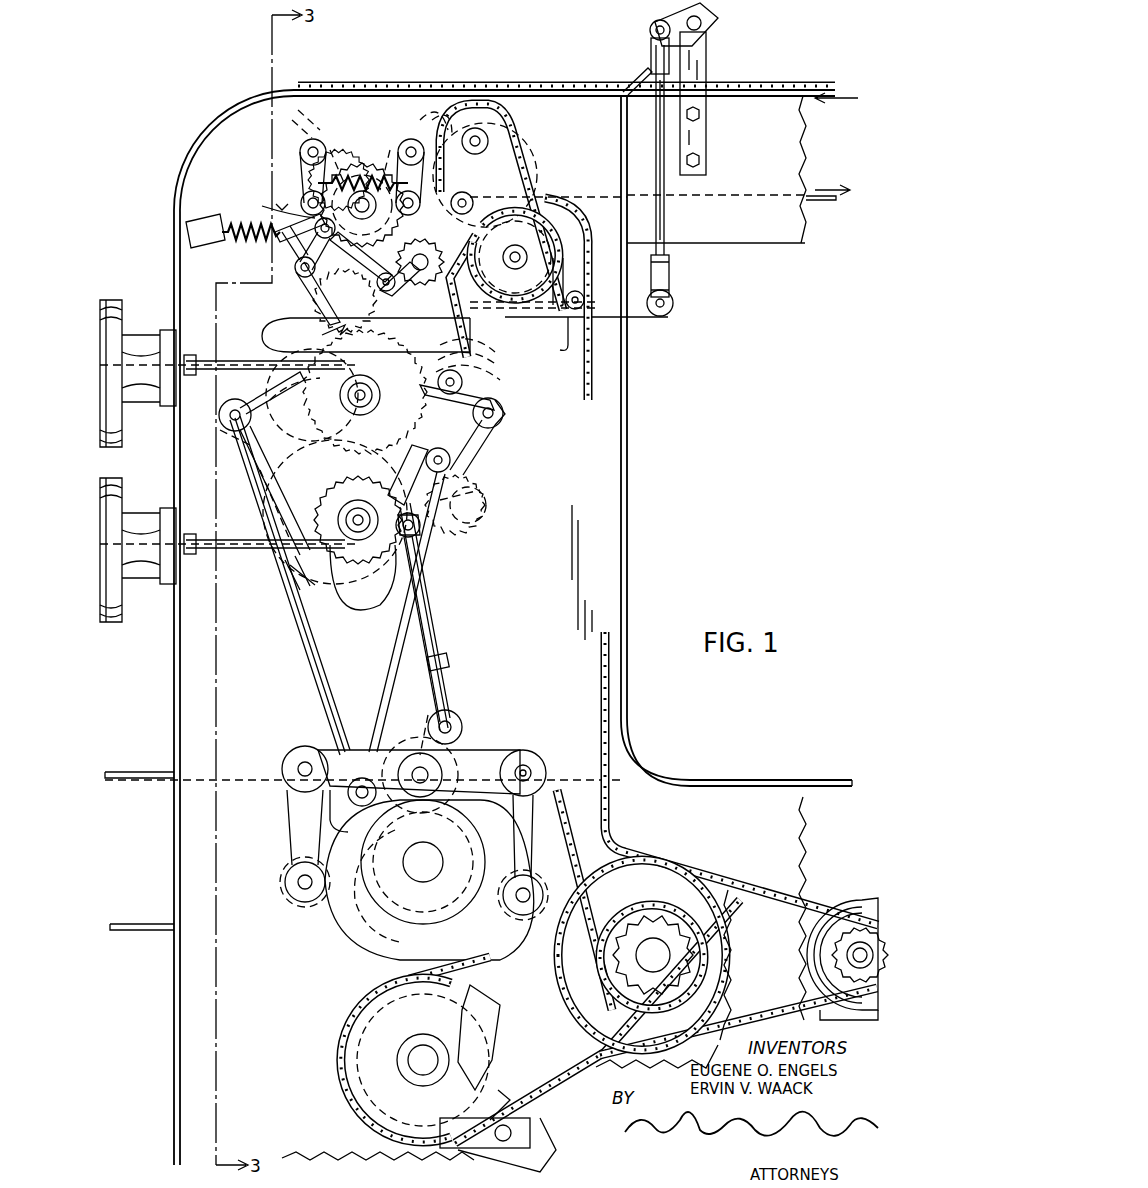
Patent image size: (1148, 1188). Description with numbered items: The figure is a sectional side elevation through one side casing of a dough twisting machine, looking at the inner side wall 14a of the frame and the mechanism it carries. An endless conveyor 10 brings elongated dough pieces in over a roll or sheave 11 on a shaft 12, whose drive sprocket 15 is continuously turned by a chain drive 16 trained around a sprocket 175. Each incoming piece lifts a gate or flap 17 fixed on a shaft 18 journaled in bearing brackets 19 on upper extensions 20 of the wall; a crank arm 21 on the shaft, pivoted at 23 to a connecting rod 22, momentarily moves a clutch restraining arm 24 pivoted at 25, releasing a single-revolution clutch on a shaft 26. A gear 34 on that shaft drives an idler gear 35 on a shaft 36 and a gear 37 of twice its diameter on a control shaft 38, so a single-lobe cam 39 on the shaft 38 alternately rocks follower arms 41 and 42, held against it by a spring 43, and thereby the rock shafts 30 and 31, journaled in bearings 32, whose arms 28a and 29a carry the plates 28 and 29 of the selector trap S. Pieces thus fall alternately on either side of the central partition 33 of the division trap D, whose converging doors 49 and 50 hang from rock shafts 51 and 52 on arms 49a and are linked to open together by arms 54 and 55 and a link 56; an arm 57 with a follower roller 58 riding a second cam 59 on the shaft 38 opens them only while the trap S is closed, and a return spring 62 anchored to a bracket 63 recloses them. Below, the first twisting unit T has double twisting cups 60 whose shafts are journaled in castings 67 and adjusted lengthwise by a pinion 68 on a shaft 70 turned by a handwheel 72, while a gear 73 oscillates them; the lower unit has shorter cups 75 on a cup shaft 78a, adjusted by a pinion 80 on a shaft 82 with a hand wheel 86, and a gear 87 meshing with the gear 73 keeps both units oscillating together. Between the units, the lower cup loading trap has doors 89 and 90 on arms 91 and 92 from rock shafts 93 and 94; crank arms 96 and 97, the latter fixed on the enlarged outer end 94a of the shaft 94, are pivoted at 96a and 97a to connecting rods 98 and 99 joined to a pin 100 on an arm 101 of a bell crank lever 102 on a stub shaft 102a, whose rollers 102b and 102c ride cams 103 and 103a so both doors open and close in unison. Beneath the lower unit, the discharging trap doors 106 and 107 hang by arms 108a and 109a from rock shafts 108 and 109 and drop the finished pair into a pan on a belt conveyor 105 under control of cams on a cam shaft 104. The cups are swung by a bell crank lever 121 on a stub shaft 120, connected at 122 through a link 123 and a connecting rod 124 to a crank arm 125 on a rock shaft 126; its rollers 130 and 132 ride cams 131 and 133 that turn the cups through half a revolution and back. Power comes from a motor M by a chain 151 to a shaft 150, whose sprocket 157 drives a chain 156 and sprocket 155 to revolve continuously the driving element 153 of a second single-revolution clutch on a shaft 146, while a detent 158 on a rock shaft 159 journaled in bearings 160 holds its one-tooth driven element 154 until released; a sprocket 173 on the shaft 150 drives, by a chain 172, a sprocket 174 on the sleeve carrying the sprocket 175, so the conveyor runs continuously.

The endless conveyor 10 is at (822, 210).
The roll or sheave 11 is at (512, 92).
The shaft 12 is at (488, 140).
The inner side wall 14a is at (566, 445).
The drive sprocket 15 is at (495, 150).
The chain drive 16 is at (548, 175).
The gate or flap 17 is at (634, 76).
The shaft 18 is at (712, 17).
The bearing brackets or blocks 19 is at (708, 132).
The upper extensions 20 is at (765, 171).
The crank arm 21 is at (652, 18).
The connecting rod 22 is at (654, 125).
The pivot connection 23 is at (650, 30).
The clutch restraining arm 24 is at (656, 316).
The pivot support 25 is at (560, 322).
The shaft 26 is at (530, 250).
The door or plate 28 is at (370, 190).
The arms 28a is at (305, 124).
The door or plate 29 is at (385, 185).
The arms 29a is at (440, 95).
The rock shaft 30 is at (316, 140).
The rock shaft 31 is at (414, 138).
The bearings 32 is at (328, 140).
The central partition 33 is at (325, 334).
The gear 34 is at (558, 195).
The idler gear 35 is at (500, 221).
The shaft 36 is at (458, 222).
The gear 37 is at (344, 160).
The control shaft 38 is at (392, 230).
The single lobe cam 39 is at (380, 250).
The follower arm 41 is at (316, 186).
The follower arm 42 is at (451, 203).
The spring 43 is at (390, 140).
The trap door 49 is at (312, 282).
The arms 49a is at (282, 248).
The trap door 50 is at (400, 300).
The rock shaft 51 is at (300, 280).
The rock shaft 52 is at (432, 266).
The arm 54 is at (285, 228).
The arm 55 is at (396, 288).
The connecting rod or link 56 is at (356, 282).
The arm 57 is at (294, 268).
The follower roller 58 is at (328, 240).
The second cam 59 is at (262, 206).
The double twisting cup 60 is at (388, 430).
The return spring 62 is at (205, 218).
The bracket 63 is at (186, 237).
The castings 67 is at (362, 490).
The pinion 68 is at (300, 425).
The shaft 70 is at (212, 372).
The handwheel 72 is at (120, 328).
The gear 73 is at (470, 395).
The double cup member 75 is at (288, 580).
The cup shaft 78a is at (470, 492).
The pinion 80 is at (350, 605).
The adjusting shaft 82 is at (210, 555).
The hand wheel 86 is at (120, 605).
The gear 87 is at (440, 572).
The trap door 89 is at (290, 398).
The trap door 90 is at (478, 368).
The arm 91 is at (275, 368).
The arm 92 is at (480, 352).
The rock shaft 93 is at (258, 382).
The rock shaft 94 is at (462, 318).
The enlarged outer end 94a is at (505, 372).
The crank arm 96 is at (244, 440).
The pivot connection 96a is at (222, 436).
The crank arm 97 is at (500, 400).
The pivot connection 97a is at (508, 418).
The connecting rod 98 is at (300, 645).
The connecting rod 99 is at (482, 440).
The pin 100 is at (340, 798).
The arm 101 is at (378, 740).
The bell crank lever 102 is at (536, 810).
The stub shaft 102a is at (530, 770).
The follower roller 102b is at (445, 758).
The roller 102c is at (535, 880).
The cam 103 is at (498, 752).
The cam 103a is at (495, 938).
The cam shaft 104 is at (432, 878).
The endless belt conveyor 105 is at (142, 780).
The trap door 106 is at (292, 590).
The trap door 107 is at (438, 548).
The rock shaft 108 is at (275, 520).
The arm 108a is at (270, 506).
The rock shaft 109 is at (482, 503).
The arm 109a is at (514, 490).
The stub shaft 120 is at (292, 778).
The bell crank lever 121 is at (292, 840).
The connection 122 is at (428, 798).
The link 123 is at (430, 712).
The connecting rod 124 is at (440, 628).
The crank arm 125 is at (452, 470).
The rock shaft 126 is at (440, 455).
The roller 130 is at (420, 745).
The cam 131 is at (382, 950).
The roller 132 is at (288, 900).
The cam 133 is at (362, 930).
The shaft 146 is at (440, 1048).
The shaft 150 is at (668, 940).
The chain 151 is at (790, 880).
The driving element 153 is at (492, 1022).
The driven element 154 is at (486, 1050).
The sprocket 155 is at (500, 1078).
The chain 156 is at (735, 930).
The sprocket 157 is at (700, 935).
The detent 158 is at (540, 1128).
The rock shaft 159 is at (512, 1108).
The bearings 160 is at (540, 1160).
The chain 172 is at (612, 706).
The sprocket 173 is at (630, 905).
The sprocket 174 is at (540, 312).
The sprocket 175 is at (556, 262).
The division trap D is at (322, 335).
The motor M is at (862, 905).
The selector trap S is at (276, 204).
The first twisting unit T is at (320, 460).